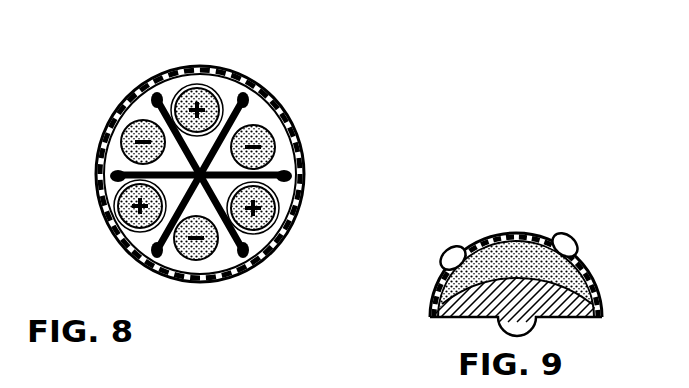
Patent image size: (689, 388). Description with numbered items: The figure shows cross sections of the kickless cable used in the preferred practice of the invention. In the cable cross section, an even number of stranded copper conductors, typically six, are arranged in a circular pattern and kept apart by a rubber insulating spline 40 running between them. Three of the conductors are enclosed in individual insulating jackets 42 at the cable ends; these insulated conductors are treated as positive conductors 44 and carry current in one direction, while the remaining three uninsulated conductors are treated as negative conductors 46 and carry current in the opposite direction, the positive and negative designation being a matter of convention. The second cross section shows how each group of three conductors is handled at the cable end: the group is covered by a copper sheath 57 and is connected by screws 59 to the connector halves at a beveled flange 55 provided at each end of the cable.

In FIG. 8, the rubber insulating spline 40 is at (299, 177).
In FIG. 8, the insulating jacket 42 is at (237, 82).
In FIG. 8, the positive conductor 44 is at (194, 93).
In FIG. 8, the negative conductor 46 is at (128, 128).
In FIG. 9, the beveled flange 55 is at (448, 318).
In FIG. 9, the copper sheath 57 is at (598, 283).
In FIG. 9, the screw 59 is at (458, 246).